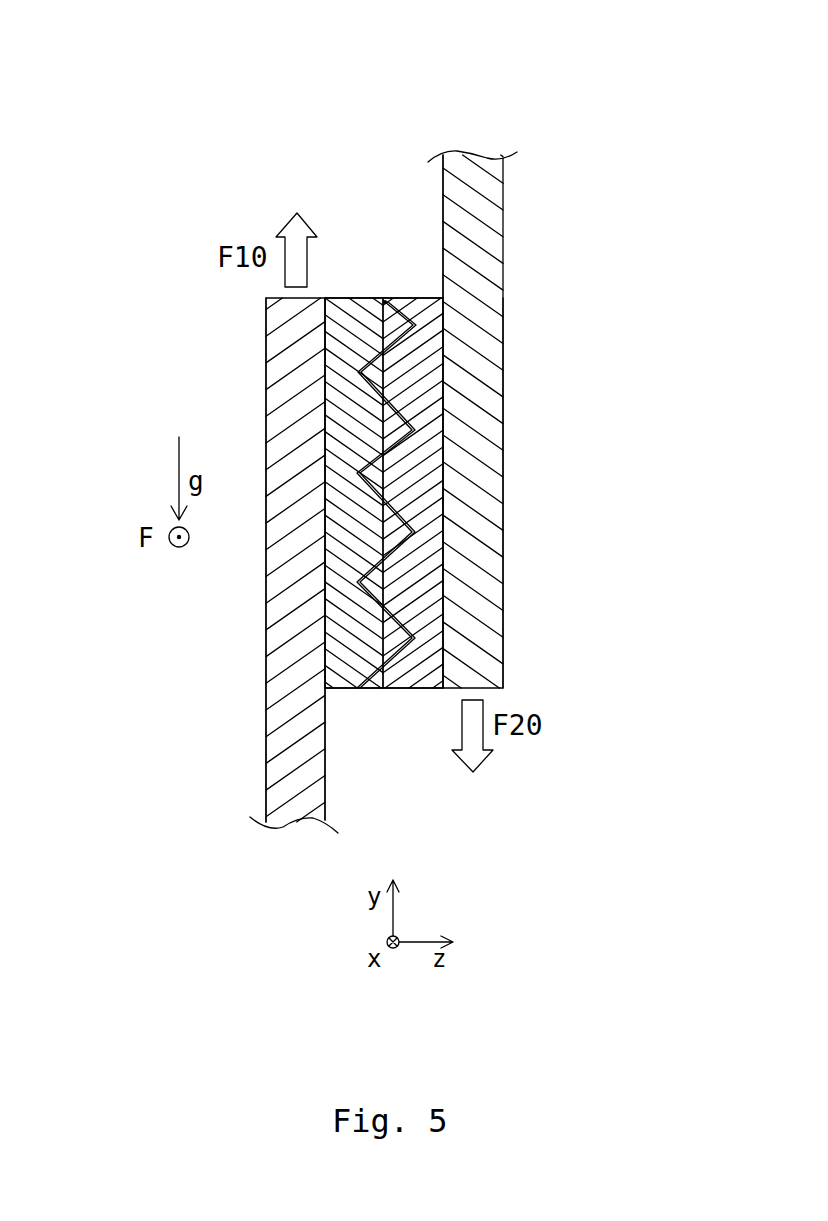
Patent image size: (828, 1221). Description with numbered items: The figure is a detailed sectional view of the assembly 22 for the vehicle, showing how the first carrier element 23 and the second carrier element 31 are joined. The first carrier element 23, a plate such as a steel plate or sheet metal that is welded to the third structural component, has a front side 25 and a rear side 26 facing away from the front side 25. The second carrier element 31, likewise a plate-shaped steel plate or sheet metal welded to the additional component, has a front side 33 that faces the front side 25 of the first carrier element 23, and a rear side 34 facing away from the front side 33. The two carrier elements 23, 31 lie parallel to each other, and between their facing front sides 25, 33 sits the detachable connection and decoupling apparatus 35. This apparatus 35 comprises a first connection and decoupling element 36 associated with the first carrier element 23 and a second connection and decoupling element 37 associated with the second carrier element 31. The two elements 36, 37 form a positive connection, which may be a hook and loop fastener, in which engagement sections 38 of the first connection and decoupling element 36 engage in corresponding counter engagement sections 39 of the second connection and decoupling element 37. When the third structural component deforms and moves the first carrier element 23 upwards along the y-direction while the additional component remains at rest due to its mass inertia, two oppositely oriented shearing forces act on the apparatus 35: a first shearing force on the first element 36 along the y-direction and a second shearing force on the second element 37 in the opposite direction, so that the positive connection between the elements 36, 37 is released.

The assembly 22 is at (383, 74).
The first carrier element 23 is at (256, 772).
The front side 25 is at (325, 787).
The rear side 26 is at (265, 693).
The second carrier element 31 is at (513, 502).
The front side 33 is at (445, 232).
The rear side 34 is at (503, 602).
The connection and decoupling apparatus 35 is at (434, 230).
The first connection and decoupling element 36 is at (373, 298).
The second connection and decoupling element 37 is at (428, 298).
The engagement sections 38 is at (365, 382).
The counter engagement sections 39 is at (387, 407).